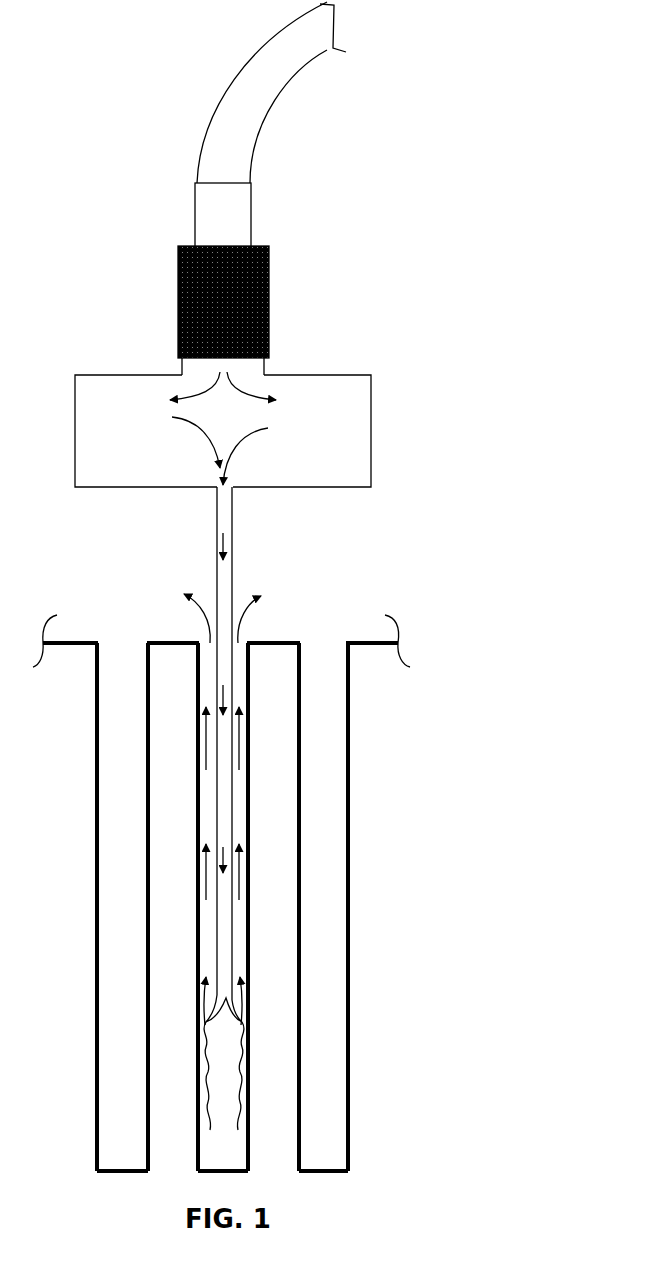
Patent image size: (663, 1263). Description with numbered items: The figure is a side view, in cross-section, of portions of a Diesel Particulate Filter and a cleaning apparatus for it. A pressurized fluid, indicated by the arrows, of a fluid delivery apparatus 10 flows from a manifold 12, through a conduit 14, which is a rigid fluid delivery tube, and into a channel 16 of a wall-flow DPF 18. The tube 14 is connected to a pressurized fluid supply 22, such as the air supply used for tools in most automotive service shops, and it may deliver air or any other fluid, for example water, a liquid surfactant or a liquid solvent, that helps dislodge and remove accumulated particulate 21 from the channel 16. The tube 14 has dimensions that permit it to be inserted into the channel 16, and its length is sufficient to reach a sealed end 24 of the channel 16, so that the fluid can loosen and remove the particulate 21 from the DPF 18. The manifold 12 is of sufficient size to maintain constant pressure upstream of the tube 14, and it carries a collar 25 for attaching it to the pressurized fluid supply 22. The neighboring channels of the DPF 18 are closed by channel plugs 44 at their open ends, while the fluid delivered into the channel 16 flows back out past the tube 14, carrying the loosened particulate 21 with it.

The fluid delivery apparatus 10 is at (303, 610).
The manifold 12 is at (371, 430).
The conduit 14 is at (214, 550).
The channel 16 is at (99, 705).
The wall-flow DPF 18 is at (282, 910).
The accumulated particulate 21 is at (203, 1057).
The pressurized fluid supply 22 is at (270, 98).
The sealed end 24 is at (115, 1173).
The collar 25 is at (269, 290).
The channel plugs 44 is at (62, 643).